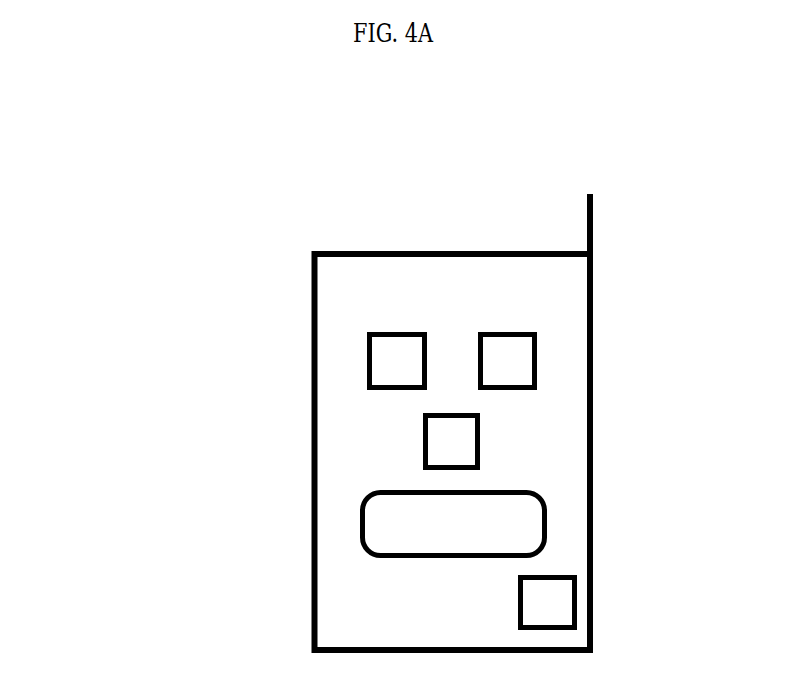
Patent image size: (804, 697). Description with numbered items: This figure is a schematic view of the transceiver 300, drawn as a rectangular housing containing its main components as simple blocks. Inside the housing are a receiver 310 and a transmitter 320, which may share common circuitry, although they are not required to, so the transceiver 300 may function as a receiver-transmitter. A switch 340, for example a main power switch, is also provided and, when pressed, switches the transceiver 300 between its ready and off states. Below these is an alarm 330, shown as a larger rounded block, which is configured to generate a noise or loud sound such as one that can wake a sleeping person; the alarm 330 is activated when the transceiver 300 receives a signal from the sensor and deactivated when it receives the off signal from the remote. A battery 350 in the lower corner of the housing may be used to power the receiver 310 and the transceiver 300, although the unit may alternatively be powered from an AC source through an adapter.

The transceiver 300 is at (150, 236).
The receiver 310 is at (367, 355).
The transmitter 320 is at (537, 355).
The alarm 330 is at (361, 524).
The switch 340 is at (480, 435).
The battery 350 is at (575, 600).